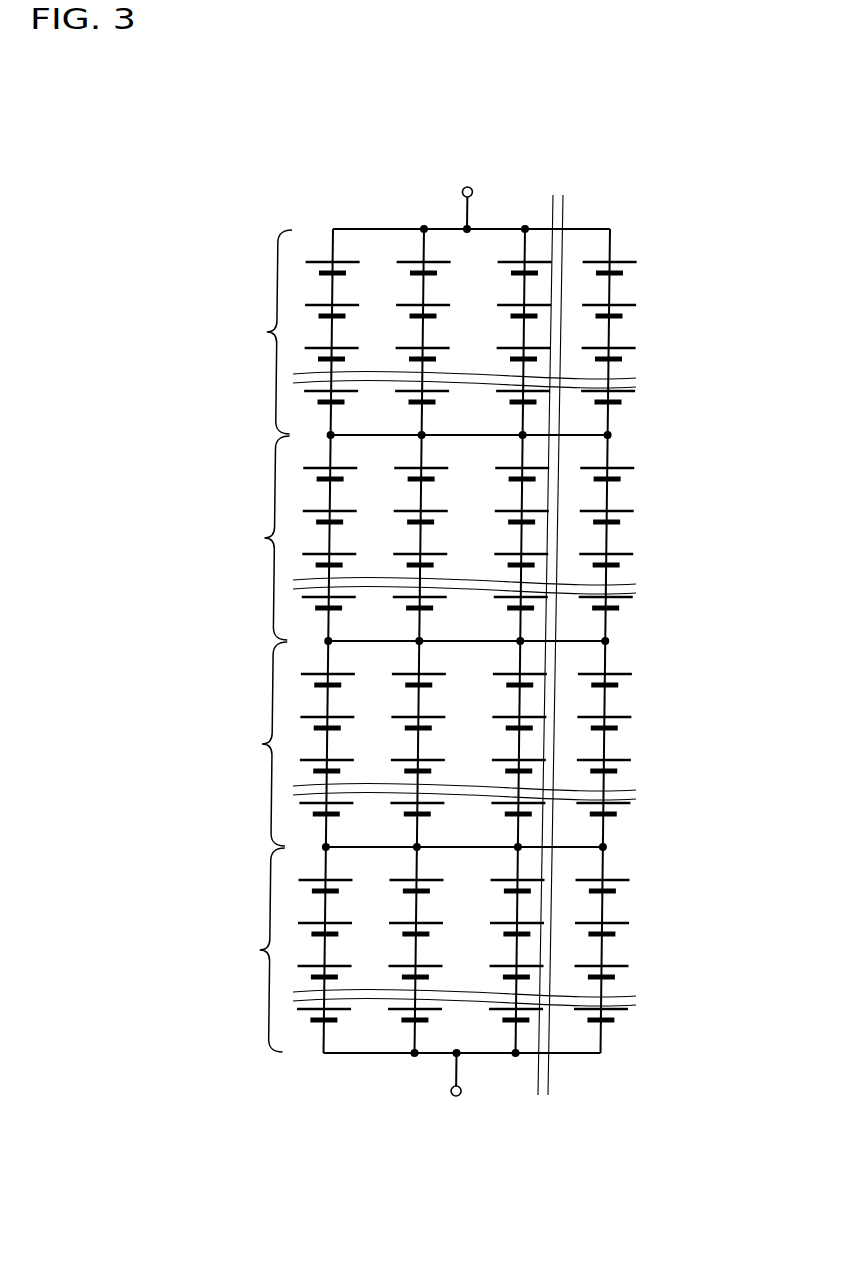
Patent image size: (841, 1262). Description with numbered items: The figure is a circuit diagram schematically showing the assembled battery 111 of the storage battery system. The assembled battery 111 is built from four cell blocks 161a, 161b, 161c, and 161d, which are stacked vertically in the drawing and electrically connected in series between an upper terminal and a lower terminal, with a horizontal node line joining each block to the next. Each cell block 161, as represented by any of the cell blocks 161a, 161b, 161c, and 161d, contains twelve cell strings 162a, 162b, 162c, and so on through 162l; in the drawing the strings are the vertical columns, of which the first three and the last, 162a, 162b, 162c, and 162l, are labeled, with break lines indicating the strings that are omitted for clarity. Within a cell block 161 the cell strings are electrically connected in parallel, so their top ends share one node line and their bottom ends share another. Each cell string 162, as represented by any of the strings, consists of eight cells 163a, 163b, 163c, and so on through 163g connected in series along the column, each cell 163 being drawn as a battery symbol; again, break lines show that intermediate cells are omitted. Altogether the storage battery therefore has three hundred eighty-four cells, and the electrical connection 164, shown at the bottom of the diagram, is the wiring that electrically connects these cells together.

The assembled battery 111 is at (180, 206).
The cell block 161 is at (390, 638).
The cell block 161a is at (393, 332).
The cell block 161b is at (391, 540).
The cell block 161c is at (388, 746).
The cell block 161d is at (225, 950).
The cell string 162 is at (518, 595).
The cell string 162a is at (337, 245).
The cell string 162b is at (427, 245).
The cell string 162c is at (527, 245).
The cell string 162l is at (656, 614).
The cell 163 is at (659, 342).
The cell 163a is at (619, 278).
The cell 163b is at (619, 321).
The cell 163c is at (619, 362).
The cell 163g is at (619, 404).
The electrical connection 164 is at (366, 1057).